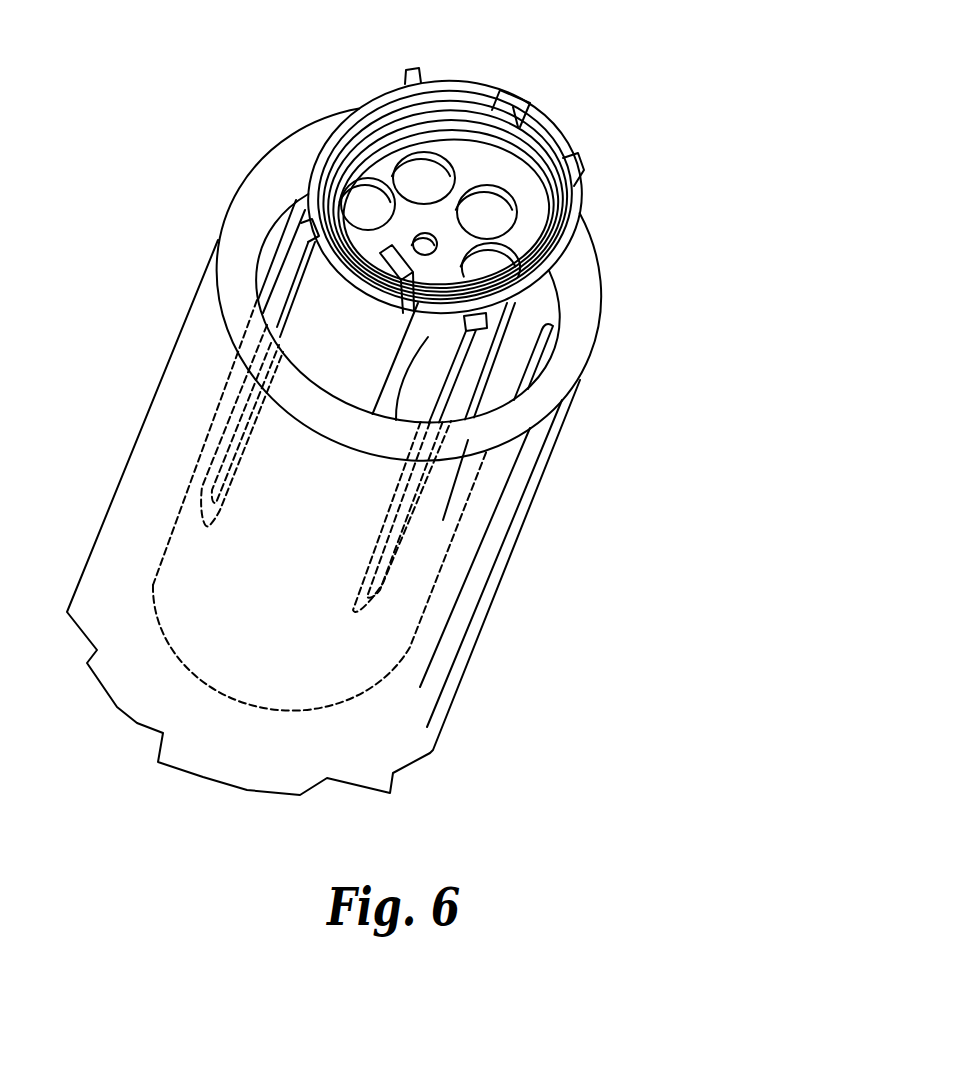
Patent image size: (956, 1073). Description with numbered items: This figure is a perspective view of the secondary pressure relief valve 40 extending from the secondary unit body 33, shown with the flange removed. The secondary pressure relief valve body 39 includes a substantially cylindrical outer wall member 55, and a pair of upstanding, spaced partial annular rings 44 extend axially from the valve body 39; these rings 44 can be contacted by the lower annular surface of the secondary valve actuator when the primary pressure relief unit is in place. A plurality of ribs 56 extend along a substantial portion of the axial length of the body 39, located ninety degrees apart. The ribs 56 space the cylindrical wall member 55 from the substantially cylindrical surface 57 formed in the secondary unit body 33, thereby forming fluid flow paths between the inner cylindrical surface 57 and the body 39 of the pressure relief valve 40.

The secondary unit body 33 is at (594, 350).
The secondary pressure relief valve body 39 is at (343, 120).
The secondary pressure relief valve 40 is at (582, 106).
The partial annular rings 44 is at (513, 97).
The cylindrical outer wall member 55 is at (573, 247).
The ribs 56 is at (313, 222).
The cylindrical surface 57 is at (541, 346).